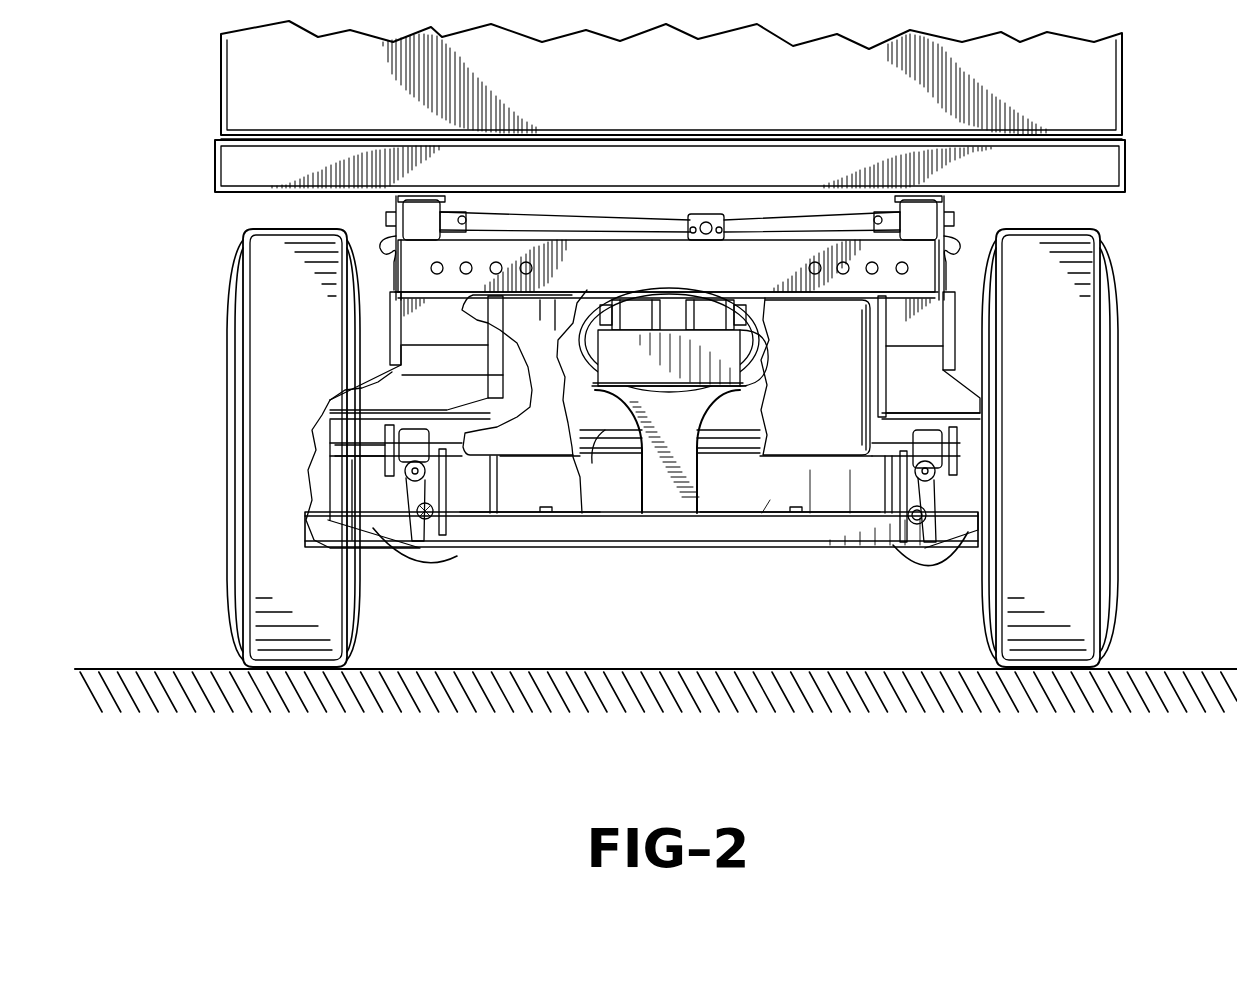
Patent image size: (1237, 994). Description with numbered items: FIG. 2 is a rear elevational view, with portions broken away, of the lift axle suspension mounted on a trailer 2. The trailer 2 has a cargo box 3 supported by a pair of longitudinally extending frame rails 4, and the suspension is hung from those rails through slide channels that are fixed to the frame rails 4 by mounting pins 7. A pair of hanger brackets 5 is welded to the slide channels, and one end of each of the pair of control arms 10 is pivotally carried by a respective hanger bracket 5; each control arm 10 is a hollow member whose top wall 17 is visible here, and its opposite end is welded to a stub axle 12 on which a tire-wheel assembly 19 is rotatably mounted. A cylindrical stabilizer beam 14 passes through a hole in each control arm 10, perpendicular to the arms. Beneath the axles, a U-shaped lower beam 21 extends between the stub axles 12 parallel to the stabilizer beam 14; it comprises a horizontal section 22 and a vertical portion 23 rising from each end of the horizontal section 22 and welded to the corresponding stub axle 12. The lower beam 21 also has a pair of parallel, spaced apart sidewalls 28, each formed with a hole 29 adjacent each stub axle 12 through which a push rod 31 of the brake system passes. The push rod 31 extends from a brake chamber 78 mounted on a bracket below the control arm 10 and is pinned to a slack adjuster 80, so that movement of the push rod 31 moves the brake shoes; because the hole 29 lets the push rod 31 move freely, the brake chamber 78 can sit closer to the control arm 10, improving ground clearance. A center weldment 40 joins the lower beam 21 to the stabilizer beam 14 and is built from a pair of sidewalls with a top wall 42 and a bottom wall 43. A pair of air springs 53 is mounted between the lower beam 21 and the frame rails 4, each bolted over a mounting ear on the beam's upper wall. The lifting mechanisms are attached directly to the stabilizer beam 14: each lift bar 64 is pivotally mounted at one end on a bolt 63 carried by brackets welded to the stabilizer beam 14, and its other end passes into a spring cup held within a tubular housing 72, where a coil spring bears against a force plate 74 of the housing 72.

The trailer 2 is at (722, 80).
The cargo box 3 is at (1098, 98).
The frame rails 4 is at (954, 222).
The hanger brackets 5 is at (395, 318).
The mounting pins 7 is at (386, 218).
The control arms 10 is at (395, 372).
The stub axle 12 is at (326, 432).
The stabilizer beam 14 is at (604, 432).
The top wall 17 is at (390, 398).
The tire-wheel assembly 19 is at (226, 353).
The lower beam 21 is at (740, 540).
The horizontal section 22 is at (517, 538).
The vertical portion 23 is at (352, 482).
The sidewalls 28 is at (802, 538).
The hole 29 is at (915, 522).
The push rod 31 is at (905, 510).
The center weldment 40 is at (708, 497).
The top wall 42 is at (688, 395).
The bottom wall 43 is at (633, 453).
The air springs 53 is at (552, 446).
The bolt 63 is at (594, 312).
The lift bar 64 is at (628, 305).
The tubular housing 72 is at (760, 332).
The force plate 74 is at (587, 335).
The brake chamber 78 is at (425, 560).
The slack adjuster 80 is at (932, 478).